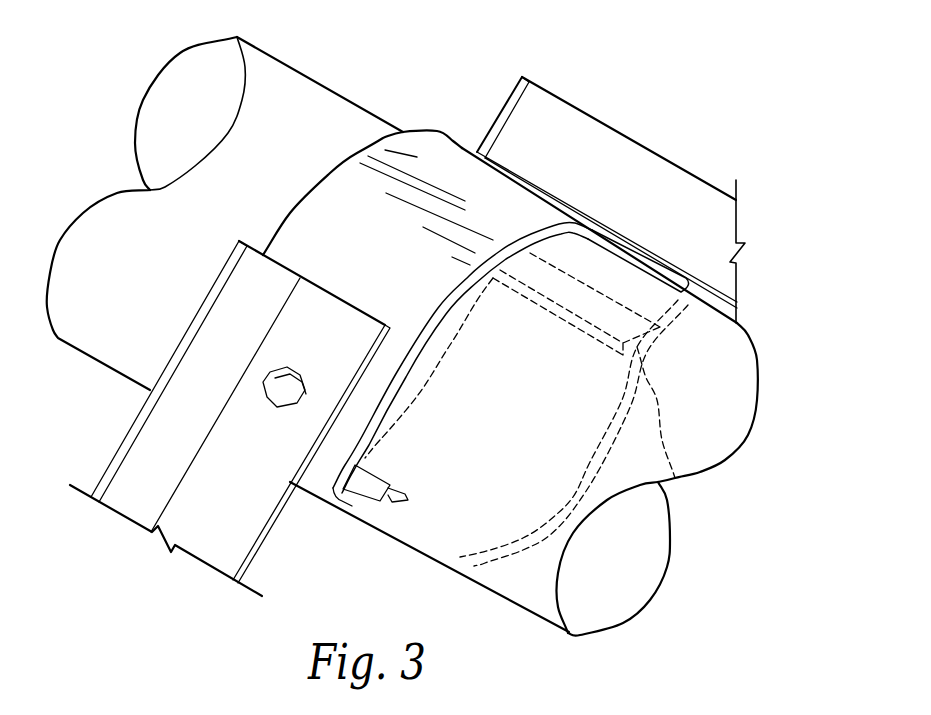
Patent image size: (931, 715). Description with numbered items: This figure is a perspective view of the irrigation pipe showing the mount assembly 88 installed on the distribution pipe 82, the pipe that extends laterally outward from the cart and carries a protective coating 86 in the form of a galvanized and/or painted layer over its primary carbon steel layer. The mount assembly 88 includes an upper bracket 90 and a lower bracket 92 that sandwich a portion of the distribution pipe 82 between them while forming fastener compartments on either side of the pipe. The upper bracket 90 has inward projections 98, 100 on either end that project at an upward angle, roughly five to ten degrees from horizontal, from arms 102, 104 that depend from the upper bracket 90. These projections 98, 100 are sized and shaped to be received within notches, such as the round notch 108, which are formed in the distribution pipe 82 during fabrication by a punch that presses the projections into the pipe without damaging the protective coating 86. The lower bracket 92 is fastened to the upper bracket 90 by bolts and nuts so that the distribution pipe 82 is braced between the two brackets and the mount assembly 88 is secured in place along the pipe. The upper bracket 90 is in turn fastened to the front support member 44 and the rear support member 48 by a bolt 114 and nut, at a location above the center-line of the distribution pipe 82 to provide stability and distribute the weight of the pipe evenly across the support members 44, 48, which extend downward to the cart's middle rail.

The front support member 44 is at (593, 142).
The rear support member 48 is at (155, 430).
The distribution pipe 82 is at (301, 108).
The protective coating 86 is at (270, 78).
The mount assembly 88 is at (452, 145).
The upper bracket 90 is at (392, 160).
The lower bracket 92 is at (440, 567).
The inward projection 98 is at (377, 500).
The inward projection 100 is at (673, 480).
The arm 102 is at (335, 510).
The arm 104 is at (673, 297).
The notch 108 is at (388, 502).
The bolt 114 is at (273, 380).